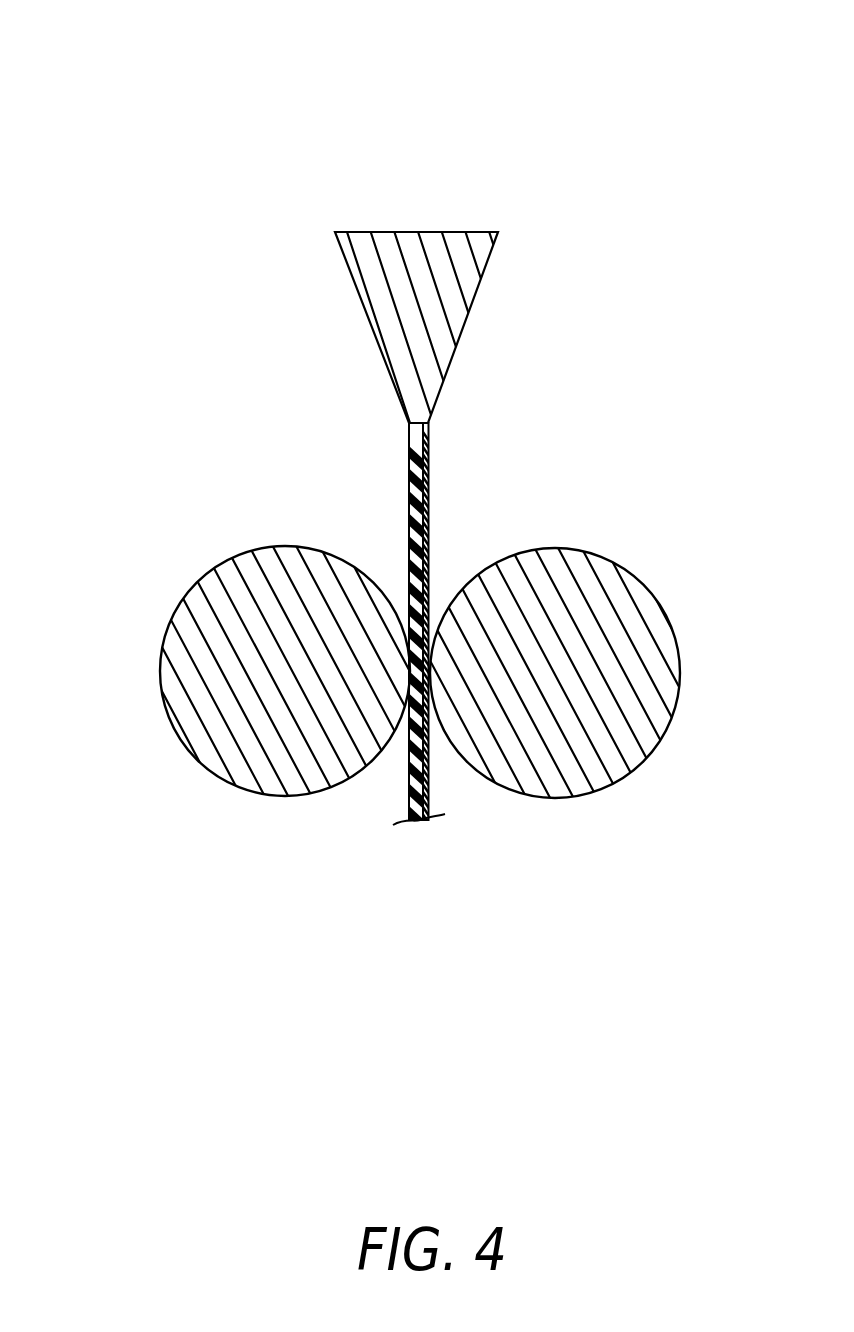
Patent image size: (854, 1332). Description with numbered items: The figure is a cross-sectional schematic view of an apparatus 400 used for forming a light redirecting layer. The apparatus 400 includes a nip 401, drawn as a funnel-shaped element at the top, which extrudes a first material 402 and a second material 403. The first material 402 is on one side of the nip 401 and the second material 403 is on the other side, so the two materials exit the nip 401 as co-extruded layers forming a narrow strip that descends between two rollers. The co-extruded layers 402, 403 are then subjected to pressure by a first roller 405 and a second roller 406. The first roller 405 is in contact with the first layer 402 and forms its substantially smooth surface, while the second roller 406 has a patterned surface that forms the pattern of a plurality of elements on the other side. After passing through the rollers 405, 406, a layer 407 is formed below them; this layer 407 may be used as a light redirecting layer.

The apparatus 400 is at (630, 100).
The nip 401 is at (450, 308).
The first material 402 is at (410, 520).
The second material 403 is at (428, 487).
The first roller 405 is at (193, 687).
The second roller 406 is at (643, 640).
The layer 407 is at (431, 840).